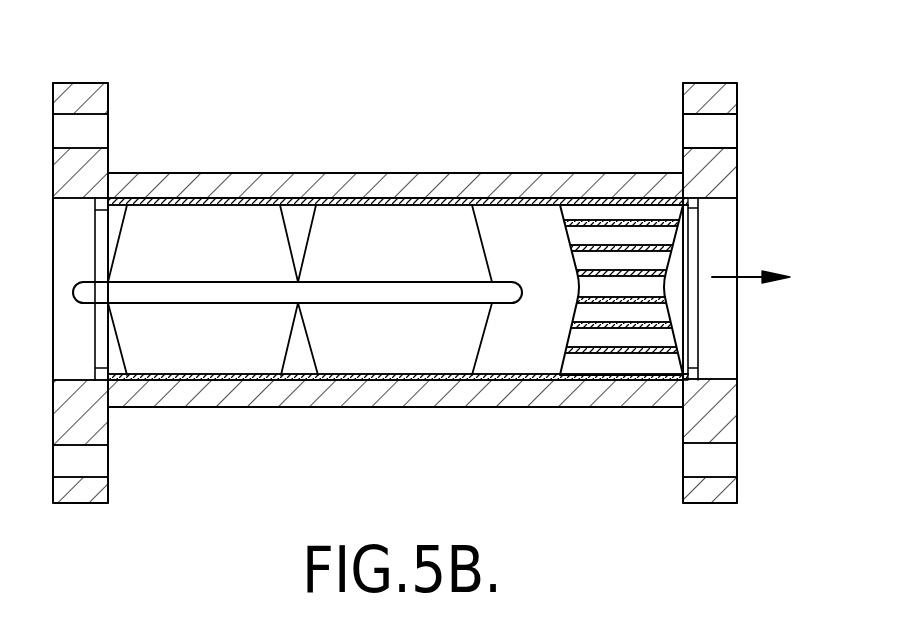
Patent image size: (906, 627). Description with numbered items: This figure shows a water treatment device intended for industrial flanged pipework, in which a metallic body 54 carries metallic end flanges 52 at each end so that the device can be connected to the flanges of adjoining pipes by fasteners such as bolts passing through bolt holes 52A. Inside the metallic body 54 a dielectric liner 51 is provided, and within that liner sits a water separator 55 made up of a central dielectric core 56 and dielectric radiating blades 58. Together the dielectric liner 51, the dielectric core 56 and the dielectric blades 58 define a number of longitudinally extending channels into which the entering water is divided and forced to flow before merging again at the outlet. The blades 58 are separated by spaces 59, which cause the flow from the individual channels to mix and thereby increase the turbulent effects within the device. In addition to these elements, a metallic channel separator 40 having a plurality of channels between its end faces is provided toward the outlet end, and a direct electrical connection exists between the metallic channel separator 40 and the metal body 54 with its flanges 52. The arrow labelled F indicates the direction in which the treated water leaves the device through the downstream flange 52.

The metallic channel separator 40 is at (588, 374).
The dielectric liner 51 is at (212, 403).
The metallic end flange 52 is at (88, 100).
The bolt hole 52A is at (695, 125).
The metallic body 54 is at (155, 173).
The water separator 55 is at (388, 245).
The central dielectric core 56 is at (387, 295).
The dielectric radiating blades 58 is at (345, 235).
The spaces 59 is at (300, 355).
The flow direction F is at (751, 254).